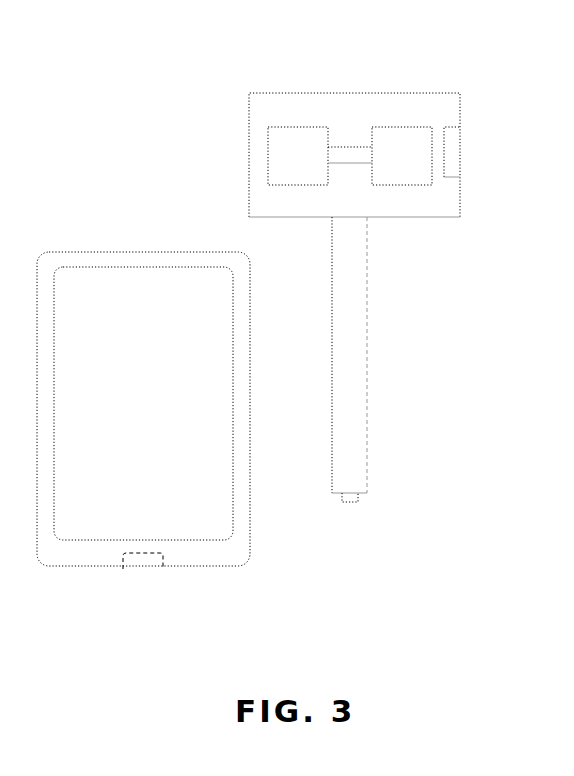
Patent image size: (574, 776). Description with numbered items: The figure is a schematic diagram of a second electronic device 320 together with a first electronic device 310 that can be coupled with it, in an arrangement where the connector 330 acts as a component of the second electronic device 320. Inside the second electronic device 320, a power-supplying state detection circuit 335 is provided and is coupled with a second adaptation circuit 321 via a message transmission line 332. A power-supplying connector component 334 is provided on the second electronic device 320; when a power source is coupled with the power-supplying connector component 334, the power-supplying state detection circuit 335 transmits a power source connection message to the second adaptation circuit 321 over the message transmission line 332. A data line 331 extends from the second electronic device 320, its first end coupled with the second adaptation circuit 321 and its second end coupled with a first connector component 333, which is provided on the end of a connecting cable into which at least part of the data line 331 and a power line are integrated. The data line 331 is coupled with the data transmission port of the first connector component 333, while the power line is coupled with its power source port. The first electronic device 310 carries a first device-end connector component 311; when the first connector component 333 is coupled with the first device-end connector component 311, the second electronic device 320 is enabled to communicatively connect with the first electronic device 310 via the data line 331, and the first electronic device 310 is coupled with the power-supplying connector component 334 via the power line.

The first electronic device 310 is at (143, 409).
The first device-end connector component 311 is at (148, 563).
The second electronic device 320 is at (354, 155).
The second adaptation circuit 321 is at (298, 156).
The connector 330 is at (440, 322).
The data line 331 is at (330, 328).
The message transmission line 332 is at (342, 142).
The first connector component 333 is at (350, 507).
The power-supplying connector component 334 is at (463, 170).
The power-supplying state detection circuit 335 is at (402, 156).